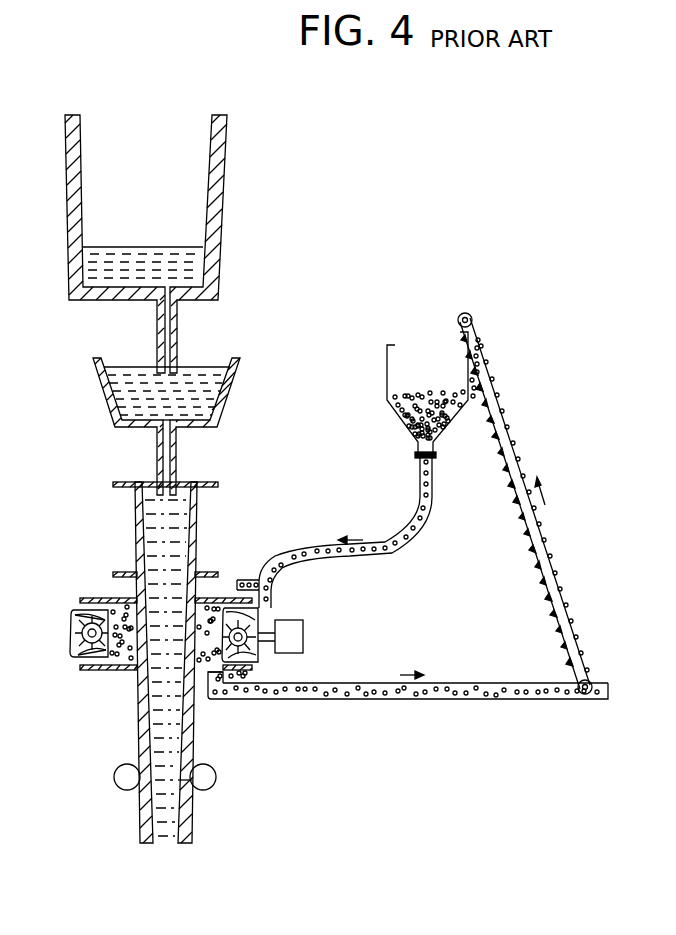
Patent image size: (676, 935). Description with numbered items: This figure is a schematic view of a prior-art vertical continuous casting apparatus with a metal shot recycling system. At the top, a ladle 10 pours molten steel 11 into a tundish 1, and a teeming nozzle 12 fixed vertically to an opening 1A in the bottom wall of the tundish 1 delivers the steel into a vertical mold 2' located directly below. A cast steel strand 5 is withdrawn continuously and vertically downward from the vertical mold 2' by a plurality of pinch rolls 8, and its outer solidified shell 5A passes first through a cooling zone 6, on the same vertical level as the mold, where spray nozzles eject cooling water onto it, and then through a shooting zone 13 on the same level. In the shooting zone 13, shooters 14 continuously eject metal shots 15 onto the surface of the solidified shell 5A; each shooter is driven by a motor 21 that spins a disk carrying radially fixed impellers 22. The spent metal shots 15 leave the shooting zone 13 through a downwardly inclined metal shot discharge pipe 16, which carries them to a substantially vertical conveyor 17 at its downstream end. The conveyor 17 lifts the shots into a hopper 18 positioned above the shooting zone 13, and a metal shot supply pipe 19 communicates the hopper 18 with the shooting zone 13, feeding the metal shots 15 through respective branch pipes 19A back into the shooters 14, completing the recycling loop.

The ladle 10 is at (227, 148).
The molten steel 11 is at (172, 258).
The tundish 1 is at (239, 373).
The opening 1A is at (170, 418).
The teeming nozzle 12 is at (177, 446).
The vertical mold 2' is at (181, 662).
The cooling zone 6 is at (118, 586).
The shooting zone 13 is at (66, 632).
The impellers 22 is at (260, 655).
The shooters 14 is at (105, 672).
The motor 21 is at (305, 635).
The metal shots 15 is at (354, 513).
The hopper 18 is at (387, 366).
The metal shot supply pipe 19 is at (392, 551).
The branch pipes 19A is at (245, 580).
The conveyor 17 is at (540, 530).
The metal shot discharge pipe 16 is at (437, 700).
The cast steel strand 5 is at (218, 717).
The solidified shell 5A is at (193, 743).
The pinch rolls 8 is at (114, 777).